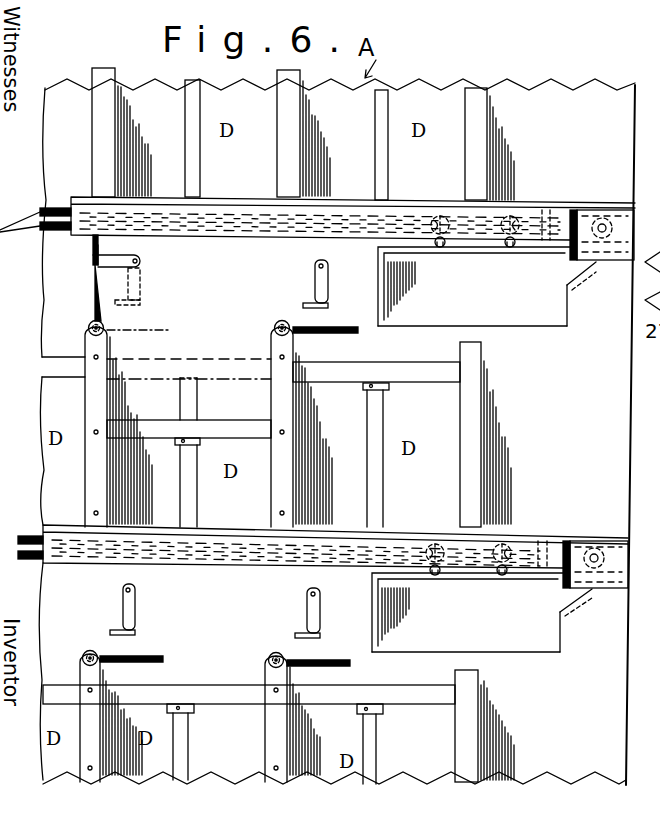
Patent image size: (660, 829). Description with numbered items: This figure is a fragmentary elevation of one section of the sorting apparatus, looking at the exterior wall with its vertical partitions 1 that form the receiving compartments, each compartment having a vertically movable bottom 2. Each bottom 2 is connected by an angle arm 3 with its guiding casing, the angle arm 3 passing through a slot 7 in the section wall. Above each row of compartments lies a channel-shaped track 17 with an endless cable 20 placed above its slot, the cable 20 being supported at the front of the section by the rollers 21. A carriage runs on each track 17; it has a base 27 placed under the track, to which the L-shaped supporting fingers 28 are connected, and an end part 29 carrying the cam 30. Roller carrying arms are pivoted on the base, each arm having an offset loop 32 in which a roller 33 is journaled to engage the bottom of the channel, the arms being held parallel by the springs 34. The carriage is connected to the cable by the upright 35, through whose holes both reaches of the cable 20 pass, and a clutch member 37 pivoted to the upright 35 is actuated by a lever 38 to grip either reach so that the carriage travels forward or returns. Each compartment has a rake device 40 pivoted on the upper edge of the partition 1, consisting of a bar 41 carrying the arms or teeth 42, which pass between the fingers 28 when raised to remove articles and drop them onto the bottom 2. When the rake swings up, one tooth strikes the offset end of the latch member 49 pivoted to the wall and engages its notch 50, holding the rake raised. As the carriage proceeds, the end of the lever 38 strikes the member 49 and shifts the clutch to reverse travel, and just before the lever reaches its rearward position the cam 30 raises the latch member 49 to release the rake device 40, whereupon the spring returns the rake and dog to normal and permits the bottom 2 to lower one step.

The vertical partition 1 is at (100, 85).
The vertically movable bottom 2 is at (42, 366).
The angle arm 3 is at (203, 440).
The slot 7 is at (193, 95).
The channel-shaped track 17 is at (80, 197).
The endless cable 20 is at (22, 536).
The roller 21 is at (606, 222).
The base 27 is at (390, 254).
The L-shaped supporting finger 28 is at (545, 326).
The end part 29 is at (567, 312).
The cam 30 is at (582, 270).
The offset loop 32 is at (441, 214).
The roller 33 is at (434, 222).
The spring 34 is at (506, 248).
The upright 35 is at (553, 216).
The clutch member 37 is at (545, 210).
The lever 38 is at (568, 258).
The rake device 40 is at (84, 318).
The bar 41 is at (88, 329).
The arm or tooth 42 is at (98, 305).
The latch member 49 is at (138, 258).
The notch 50 is at (93, 252).